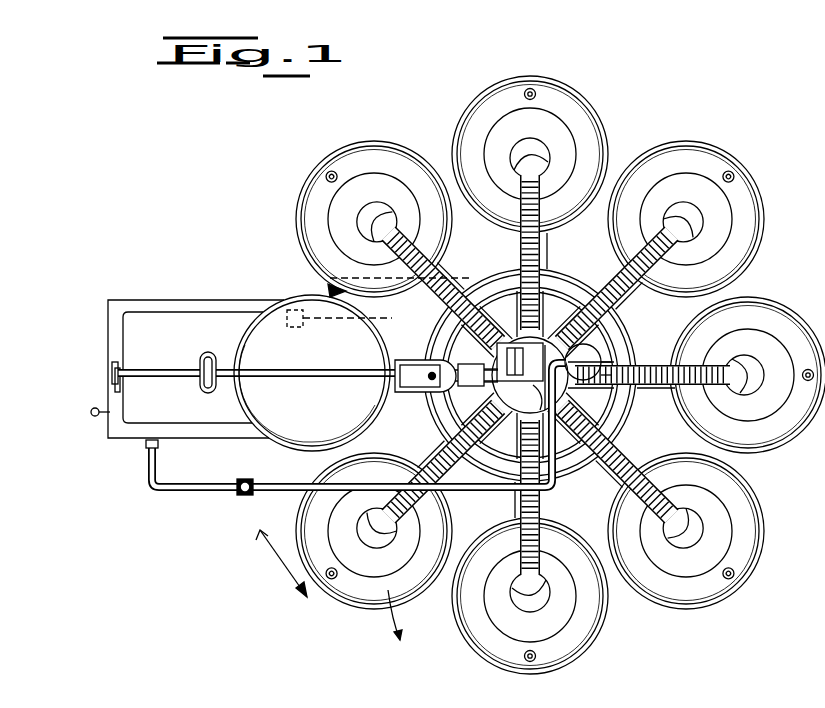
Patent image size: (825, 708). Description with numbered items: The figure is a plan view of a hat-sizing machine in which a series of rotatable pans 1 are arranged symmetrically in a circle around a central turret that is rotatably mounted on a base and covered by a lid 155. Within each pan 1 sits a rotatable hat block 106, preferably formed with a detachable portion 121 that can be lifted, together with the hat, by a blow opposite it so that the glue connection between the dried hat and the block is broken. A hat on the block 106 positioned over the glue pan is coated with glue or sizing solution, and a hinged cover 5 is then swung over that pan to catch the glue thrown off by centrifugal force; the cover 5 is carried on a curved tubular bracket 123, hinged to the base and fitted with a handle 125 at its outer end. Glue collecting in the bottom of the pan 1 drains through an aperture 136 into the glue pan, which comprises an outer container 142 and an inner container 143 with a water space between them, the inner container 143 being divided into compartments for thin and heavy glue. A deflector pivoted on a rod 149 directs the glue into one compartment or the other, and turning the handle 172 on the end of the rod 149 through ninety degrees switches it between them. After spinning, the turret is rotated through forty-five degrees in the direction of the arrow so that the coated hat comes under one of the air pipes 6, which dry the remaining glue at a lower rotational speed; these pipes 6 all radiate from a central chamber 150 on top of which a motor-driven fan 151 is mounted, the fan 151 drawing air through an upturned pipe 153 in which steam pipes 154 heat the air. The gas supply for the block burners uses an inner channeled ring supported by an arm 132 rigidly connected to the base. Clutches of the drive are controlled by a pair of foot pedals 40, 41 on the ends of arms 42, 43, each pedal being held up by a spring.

The rotatable pan 1 is at (765, 322).
The hinged cover 5 is at (286, 414).
The air pipe 6 is at (414, 254).
The foot pedal 40 is at (285, 311).
The foot pedal 41 is at (332, 290).
The arm 42 is at (424, 300).
The arm 43 is at (444, 284).
The rotatable hat block 106 is at (392, 222).
The detachable portion 121 is at (373, 210).
The curved tubular bracket 123 is at (302, 358).
The handle 125 is at (218, 338).
The arm 132 is at (413, 390).
The aperture 136 is at (336, 171).
The outer container 142 is at (130, 288).
The inner container 143 is at (173, 314).
The rod 149 is at (145, 368).
The central chamber 150 is at (513, 332).
The fan 151 is at (537, 372).
The upturned pipe 153 is at (612, 356).
The steam pipes 154 is at (600, 350).
The lid 155 is at (548, 310).
The handle 172 is at (117, 390).